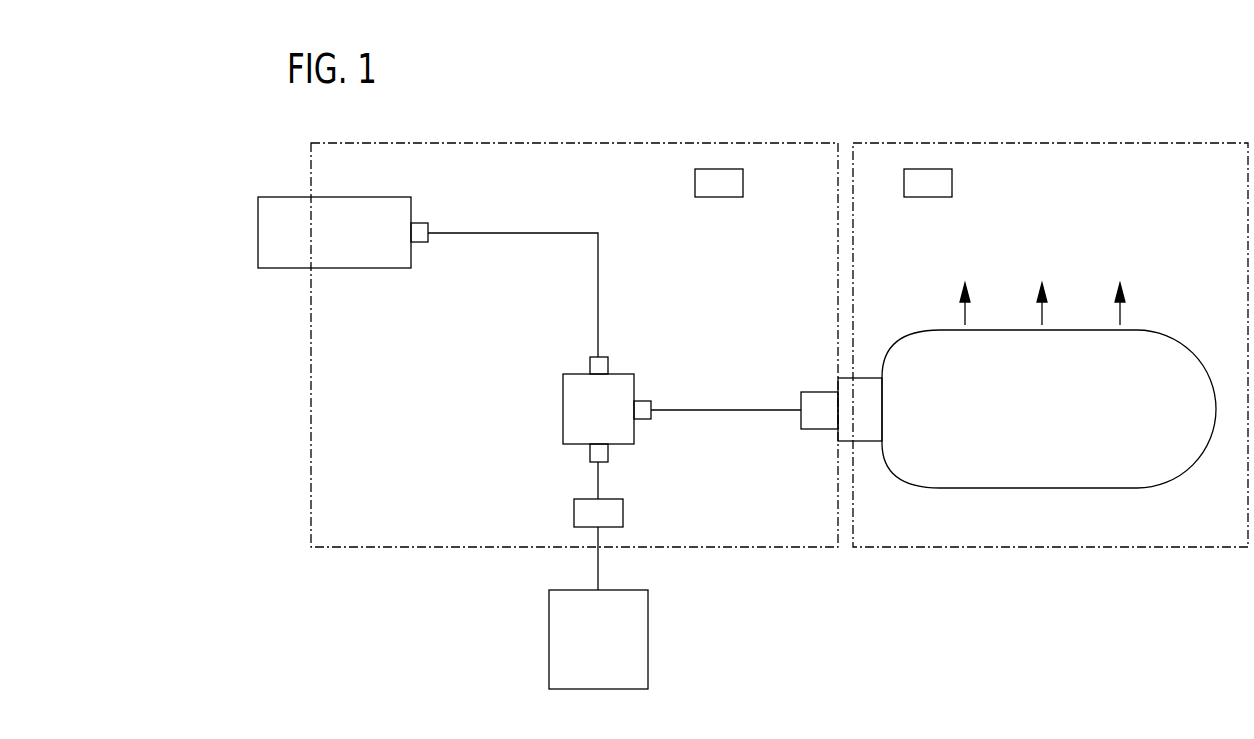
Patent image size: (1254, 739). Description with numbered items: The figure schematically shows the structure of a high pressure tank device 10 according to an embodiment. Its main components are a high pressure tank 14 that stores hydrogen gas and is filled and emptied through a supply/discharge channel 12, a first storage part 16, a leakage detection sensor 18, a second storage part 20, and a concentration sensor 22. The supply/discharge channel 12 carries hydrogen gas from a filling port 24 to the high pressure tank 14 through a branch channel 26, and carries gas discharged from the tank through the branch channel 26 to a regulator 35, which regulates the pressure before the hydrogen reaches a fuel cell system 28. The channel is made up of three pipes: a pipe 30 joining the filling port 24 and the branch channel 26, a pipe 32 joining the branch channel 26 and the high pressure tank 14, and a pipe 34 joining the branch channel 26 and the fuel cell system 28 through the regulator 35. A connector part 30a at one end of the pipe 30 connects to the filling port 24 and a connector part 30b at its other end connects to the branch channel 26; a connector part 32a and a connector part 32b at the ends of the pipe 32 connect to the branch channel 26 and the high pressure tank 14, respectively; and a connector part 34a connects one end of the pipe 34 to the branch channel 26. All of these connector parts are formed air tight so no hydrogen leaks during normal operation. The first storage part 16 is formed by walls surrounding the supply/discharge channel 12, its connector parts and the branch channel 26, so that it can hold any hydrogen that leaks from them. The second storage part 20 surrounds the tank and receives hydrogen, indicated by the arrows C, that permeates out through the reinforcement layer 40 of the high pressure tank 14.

The high pressure tank device 10 is at (1126, 88).
The supply/discharge channel 12 is at (493, 282).
The high pressure tank 14 is at (1167, 302).
The first storage part 16 is at (746, 141).
The leakage detection sensor 18 is at (719, 191).
The second storage part 20 is at (943, 141).
The concentration sensor 22 is at (927, 191).
The filling port 24 is at (263, 270).
The branch channel 26 is at (574, 396).
The fuel cell system 28 is at (649, 614).
The pipe 30 is at (530, 232).
The connector part 30a is at (415, 222).
The connector part 30b is at (593, 356).
The pipe 32 is at (736, 408).
The connector part 32a is at (643, 421).
The connector part 32b is at (813, 421).
The pipe 34 is at (600, 483).
The connector part 34a is at (588, 455).
The regulator 35 is at (573, 512).
The reinforcement layer 40 is at (1178, 345).